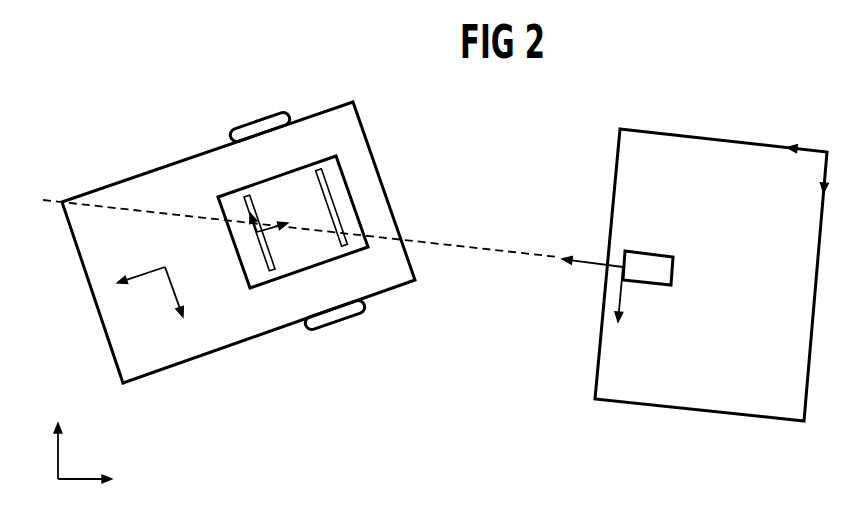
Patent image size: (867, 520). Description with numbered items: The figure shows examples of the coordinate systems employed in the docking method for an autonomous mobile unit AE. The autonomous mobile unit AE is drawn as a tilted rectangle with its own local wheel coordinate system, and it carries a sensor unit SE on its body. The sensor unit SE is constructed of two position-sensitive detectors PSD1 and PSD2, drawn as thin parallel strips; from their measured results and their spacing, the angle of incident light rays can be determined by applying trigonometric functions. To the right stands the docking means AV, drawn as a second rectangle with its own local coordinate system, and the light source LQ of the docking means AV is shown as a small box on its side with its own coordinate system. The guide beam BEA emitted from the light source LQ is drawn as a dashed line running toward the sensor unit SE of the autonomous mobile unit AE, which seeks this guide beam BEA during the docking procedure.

The autonomous mobile unit AE is at (157, 362).
The sensor unit SE is at (255, 278).
The position-sensitive detector PSD1 is at (318, 168).
The position-sensitive detector PSD2 is at (246, 196).
The guide beam BEA is at (473, 247).
The docking means AV is at (622, 392).
The light source LQ is at (655, 263).